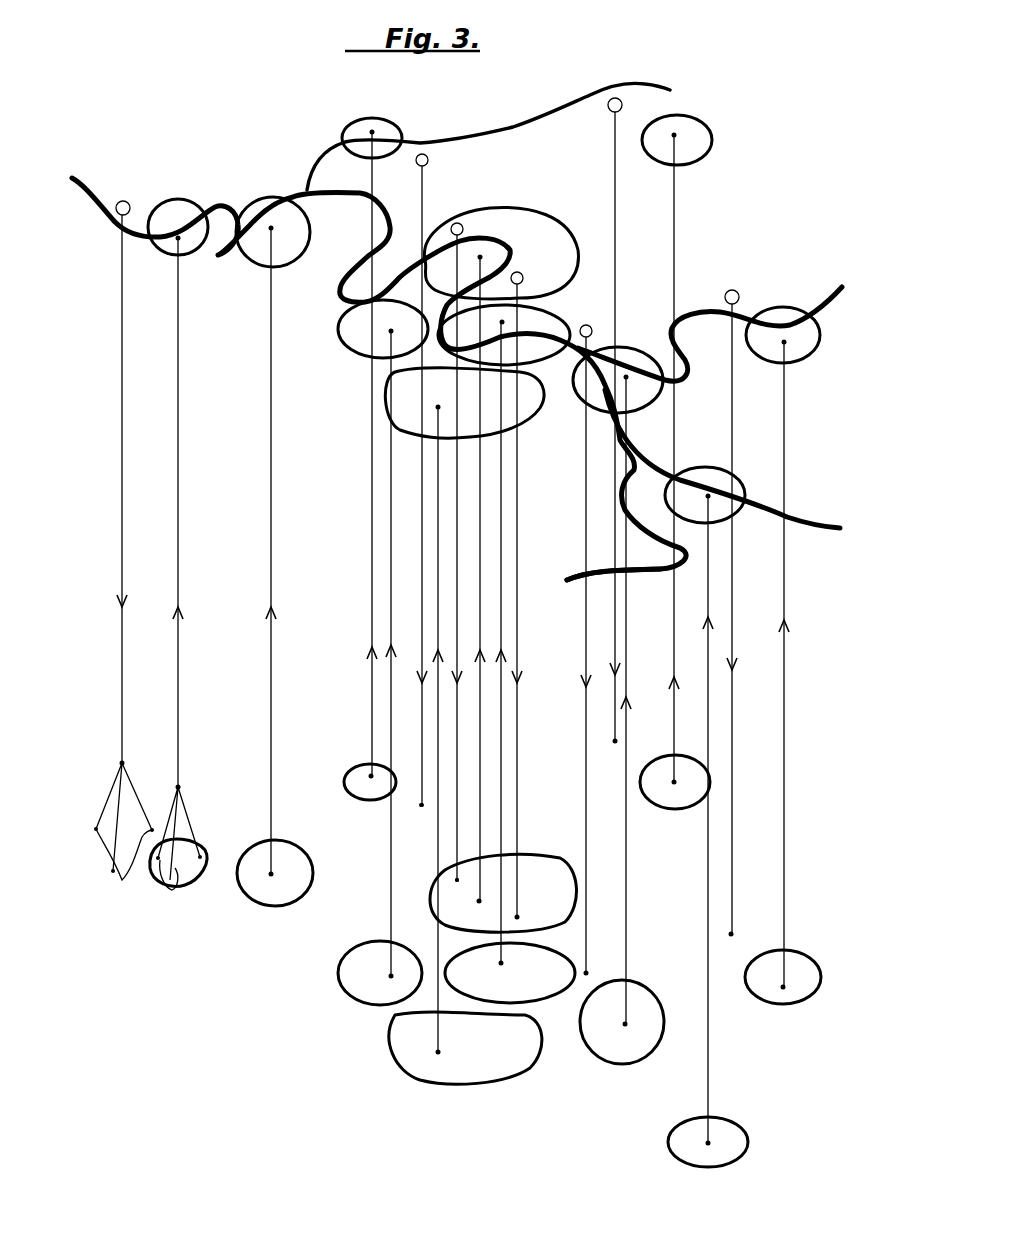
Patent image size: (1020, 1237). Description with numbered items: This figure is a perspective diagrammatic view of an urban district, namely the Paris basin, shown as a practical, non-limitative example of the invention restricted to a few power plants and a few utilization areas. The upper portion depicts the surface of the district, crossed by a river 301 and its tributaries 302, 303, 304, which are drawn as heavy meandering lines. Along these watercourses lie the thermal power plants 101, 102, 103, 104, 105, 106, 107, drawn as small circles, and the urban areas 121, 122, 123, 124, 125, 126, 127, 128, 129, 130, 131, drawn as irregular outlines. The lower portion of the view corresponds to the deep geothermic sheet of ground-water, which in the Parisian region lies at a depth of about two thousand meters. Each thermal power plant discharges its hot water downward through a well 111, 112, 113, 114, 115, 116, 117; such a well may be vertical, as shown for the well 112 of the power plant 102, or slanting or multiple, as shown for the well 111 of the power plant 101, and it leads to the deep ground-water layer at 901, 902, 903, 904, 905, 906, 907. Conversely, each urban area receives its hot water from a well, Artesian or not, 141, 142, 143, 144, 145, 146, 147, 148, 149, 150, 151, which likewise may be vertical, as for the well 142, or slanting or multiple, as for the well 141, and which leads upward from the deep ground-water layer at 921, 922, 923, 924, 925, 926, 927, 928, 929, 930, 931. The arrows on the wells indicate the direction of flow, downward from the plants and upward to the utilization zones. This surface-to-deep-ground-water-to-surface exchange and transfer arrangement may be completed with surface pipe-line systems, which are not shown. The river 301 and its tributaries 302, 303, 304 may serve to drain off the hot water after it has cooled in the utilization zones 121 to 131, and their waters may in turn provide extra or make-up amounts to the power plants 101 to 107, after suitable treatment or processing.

The thermal power plant 101 is at (123, 201).
The thermal power plant 102 is at (428, 160).
The thermal power plant 103 is at (457, 223).
The thermal power plant 104 is at (521, 274).
The thermal power plant 105 is at (592, 332).
The thermal power plant 106 is at (612, 112).
The thermal power plant 107 is at (725, 293).
The well 111 is at (122, 551).
The well 112 is at (422, 573).
The well 113 is at (457, 620).
The well 114 is at (517, 495).
The well 115 is at (586, 655).
The well 116 is at (615, 645).
The well 117 is at (710, 647).
The urban area 121 is at (177, 210).
The urban area 122 is at (255, 216).
The urban area 123 is at (360, 128).
The urban area 124 is at (356, 330).
The urban area 125 is at (388, 400).
The urban area 126 is at (507, 222).
The urban area 127 is at (547, 318).
The urban area 128 is at (600, 407).
The urban area 129 is at (697, 133).
The urban area 130 is at (710, 470).
The urban area 131 is at (795, 355).
The well 141 is at (179, 681).
The well 142 is at (271, 716).
The well 143 is at (372, 678).
The well 144 is at (390, 527).
The well 145 is at (438, 493).
The well 146 is at (480, 628).
The well 147 is at (503, 585).
The well 148 is at (626, 642).
The well 149 is at (674, 608).
The well 150 is at (710, 562).
The well 151 is at (784, 589).
The river 301 is at (73, 177).
The tributary 302 is at (580, 100).
The tributary 303 is at (838, 286).
The tributary 304 is at (600, 568).
The deep sheet of ground-water 901 is at (118, 873).
The deep sheet of ground-water 902 is at (421, 805).
The deep sheet of ground-water 903 is at (457, 880).
The deep sheet of ground-water 904 is at (518, 915).
The deep sheet of ground-water 905 is at (586, 973).
The deep sheet of ground-water 906 is at (615, 741).
The deep sheet of ground-water 907 is at (731, 934).
The deep sheet of ground-water 921 is at (173, 885).
The deep sheet of ground-water 922 is at (273, 875).
The deep sheet of ground-water 923 is at (368, 778).
The deep sheet of ground-water 924 is at (390, 973).
The deep sheet of ground-water 925 is at (440, 1052).
The deep sheet of ground-water 926 is at (477, 902).
The deep sheet of ground-water 927 is at (503, 963).
The deep sheet of ground-water 928 is at (625, 1024).
The deep sheet of ground-water 929 is at (676, 784).
The deep sheet of ground-water 930 is at (709, 1142).
The deep sheet of ground-water 931 is at (783, 987).